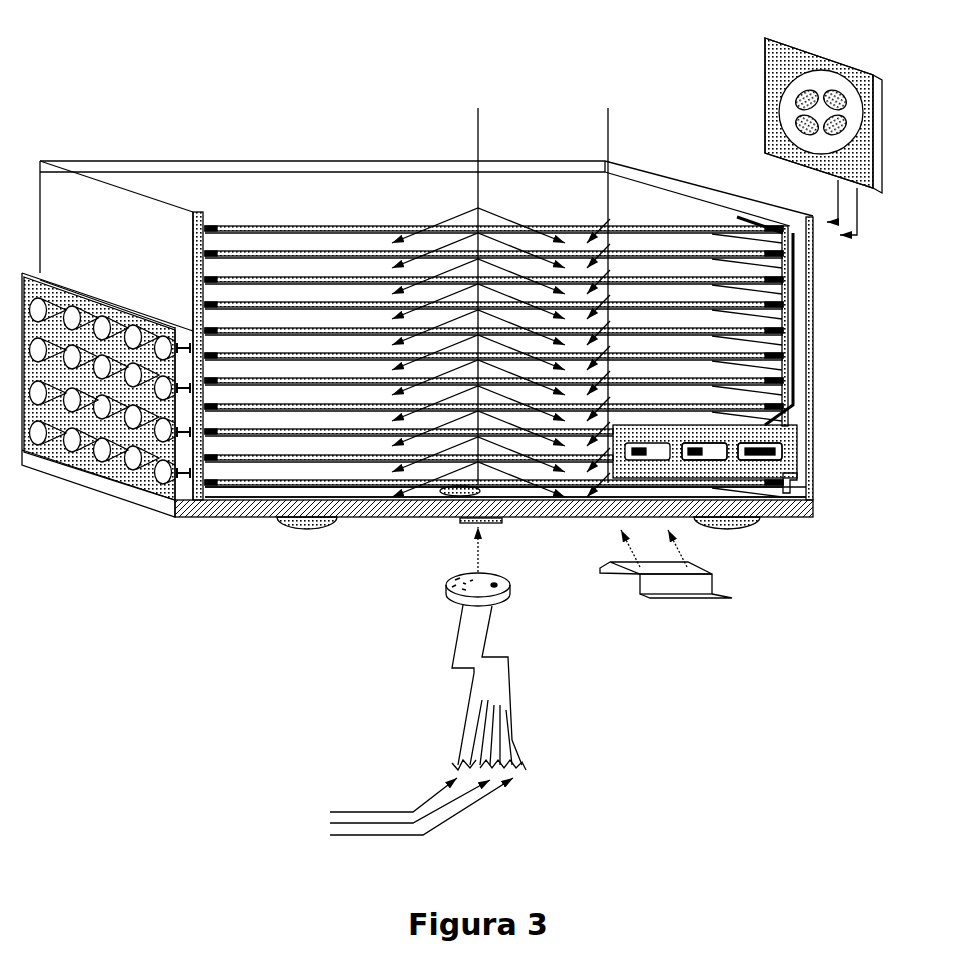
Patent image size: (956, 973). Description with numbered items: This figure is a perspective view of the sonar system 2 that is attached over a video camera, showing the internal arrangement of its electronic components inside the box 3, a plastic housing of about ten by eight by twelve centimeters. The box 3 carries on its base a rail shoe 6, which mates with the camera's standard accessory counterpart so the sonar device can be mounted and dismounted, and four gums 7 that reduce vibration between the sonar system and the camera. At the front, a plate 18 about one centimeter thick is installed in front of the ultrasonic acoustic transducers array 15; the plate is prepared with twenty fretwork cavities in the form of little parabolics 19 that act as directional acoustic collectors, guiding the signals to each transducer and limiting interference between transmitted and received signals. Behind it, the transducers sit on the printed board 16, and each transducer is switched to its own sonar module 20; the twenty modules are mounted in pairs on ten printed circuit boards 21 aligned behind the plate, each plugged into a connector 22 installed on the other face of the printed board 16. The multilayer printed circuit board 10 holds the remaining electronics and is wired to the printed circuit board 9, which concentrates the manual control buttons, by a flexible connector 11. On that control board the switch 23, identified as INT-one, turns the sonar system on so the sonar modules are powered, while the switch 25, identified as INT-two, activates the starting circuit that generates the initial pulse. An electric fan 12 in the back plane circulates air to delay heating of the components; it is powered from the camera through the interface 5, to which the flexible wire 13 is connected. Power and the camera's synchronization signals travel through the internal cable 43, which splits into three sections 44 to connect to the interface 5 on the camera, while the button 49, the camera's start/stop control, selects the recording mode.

The sonar system 2 is at (337, 168).
The box 3 is at (48, 202).
The interface 5 is at (460, 520).
The rail shoe 6 is at (693, 584).
The gums 7 is at (320, 524).
The printed circuit board 9 is at (797, 474).
The multilayer printed circuit board 10 is at (675, 204).
The flexible connector 11 is at (800, 333).
The electric fan 12 is at (767, 61).
The flexible wire 13 is at (783, 499).
The ultrasonic acoustic transducers array 15 is at (183, 478).
The printed board 16 is at (198, 228).
The plate 18 is at (70, 467).
The little parabolics 19 is at (130, 465).
The sonar module 20 is at (479, 285).
The printed circuit boards 21 is at (609, 284).
The connector 22 is at (208, 233).
The switch 23 is at (650, 457).
The switch 25 is at (727, 446).
The button 49 is at (763, 458).
The internal cable 43 is at (457, 641).
The sections 44 is at (406, 807).